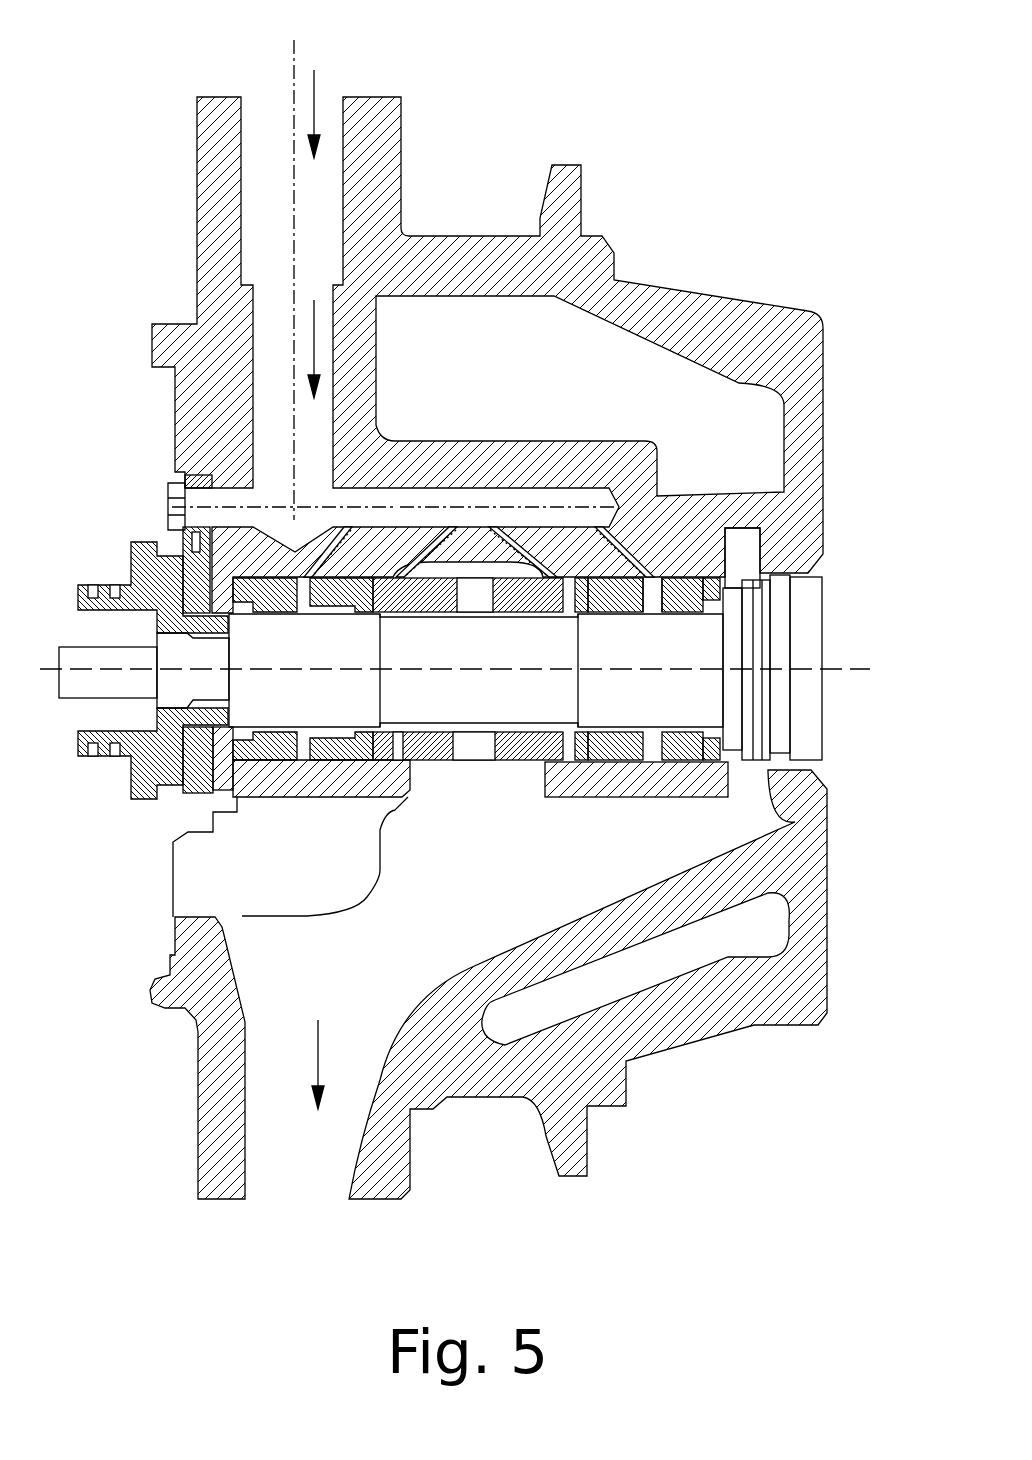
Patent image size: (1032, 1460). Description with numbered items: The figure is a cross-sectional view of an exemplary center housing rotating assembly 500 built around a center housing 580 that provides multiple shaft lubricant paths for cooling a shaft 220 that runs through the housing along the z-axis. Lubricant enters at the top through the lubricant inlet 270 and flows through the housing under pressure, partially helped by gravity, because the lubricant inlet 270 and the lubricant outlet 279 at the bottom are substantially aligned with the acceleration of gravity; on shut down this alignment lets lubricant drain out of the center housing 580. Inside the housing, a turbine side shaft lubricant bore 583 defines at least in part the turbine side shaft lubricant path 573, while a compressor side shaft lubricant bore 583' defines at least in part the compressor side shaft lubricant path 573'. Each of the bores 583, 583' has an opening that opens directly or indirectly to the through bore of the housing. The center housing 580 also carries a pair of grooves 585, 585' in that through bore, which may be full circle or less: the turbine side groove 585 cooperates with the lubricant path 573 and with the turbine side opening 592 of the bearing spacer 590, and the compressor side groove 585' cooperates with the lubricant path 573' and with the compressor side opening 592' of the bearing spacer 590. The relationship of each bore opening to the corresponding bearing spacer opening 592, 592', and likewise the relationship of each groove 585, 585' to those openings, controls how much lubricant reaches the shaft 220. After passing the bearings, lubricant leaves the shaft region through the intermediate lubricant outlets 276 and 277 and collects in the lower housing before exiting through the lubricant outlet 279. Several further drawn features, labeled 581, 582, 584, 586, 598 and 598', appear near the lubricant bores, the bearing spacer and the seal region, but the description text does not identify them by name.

The pump assembly 500 is at (126, 111).
The lubricant inlet 270 is at (345, 70).
The center housing 580 is at (778, 356).
The insert 581 is at (348, 522).
The passage 582 is at (599, 523).
The turbine side shaft lubricant bore 583 is at (538, 476).
The compressor side shaft lubricant bore 583' is at (466, 476).
The turbine side shaft lubricant path 573 is at (507, 506).
The compressor side shaft lubricant path 573' is at (309, 506).
The seal housing 586 is at (300, 582).
The turbine side groove 585 is at (616, 717).
The compressor side groove 585' is at (385, 717).
The turbine side opening of the bearing spacer 592 is at (468, 614).
The compressor side opening of the bearing spacer 592' is at (468, 726).
The seal element 598 is at (455, 614).
The seal element 598' is at (509, 726).
The spacer 584 is at (652, 583).
The bearing spacer 590 is at (522, 762).
The shaft 220 is at (498, 682).
The intermediate lubricant outlet 276 is at (410, 785).
The intermediate lubricant outlet 277 is at (770, 776).
The lubricant outlet 279 is at (308, 1238).